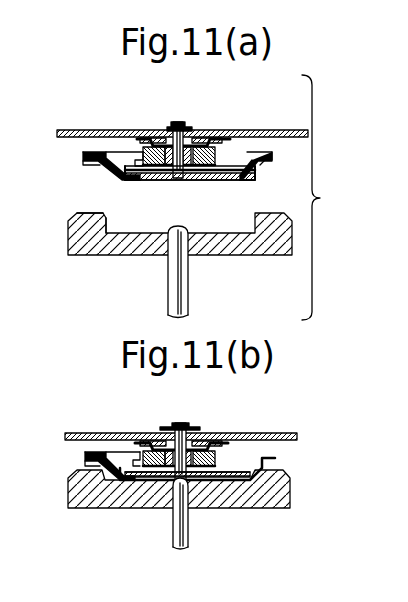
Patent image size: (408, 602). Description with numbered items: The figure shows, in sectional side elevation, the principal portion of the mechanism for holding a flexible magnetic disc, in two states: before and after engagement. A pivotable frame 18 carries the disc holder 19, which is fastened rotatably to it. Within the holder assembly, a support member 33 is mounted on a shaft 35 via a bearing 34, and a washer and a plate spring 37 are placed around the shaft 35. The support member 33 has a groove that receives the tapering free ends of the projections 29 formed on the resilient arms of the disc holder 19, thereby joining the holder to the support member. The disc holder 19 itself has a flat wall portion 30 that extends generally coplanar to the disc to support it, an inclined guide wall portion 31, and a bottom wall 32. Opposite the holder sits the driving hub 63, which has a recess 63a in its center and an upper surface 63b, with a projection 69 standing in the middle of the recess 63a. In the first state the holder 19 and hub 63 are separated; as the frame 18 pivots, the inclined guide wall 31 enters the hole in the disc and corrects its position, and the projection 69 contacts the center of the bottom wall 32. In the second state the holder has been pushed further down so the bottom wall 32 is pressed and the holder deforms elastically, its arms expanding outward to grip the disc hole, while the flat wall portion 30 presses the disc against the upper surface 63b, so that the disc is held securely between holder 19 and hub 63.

In FIG. 11A, the pivotable frame 18 is at (283, 130).
In FIG. 11B, the pivotable frame 18 is at (265, 433).
In FIG. 11A, the disc holder 19 is at (115, 177).
In FIG. 11B, the disc holder 19 is at (108, 478).
In FIG. 11A, the projection 29 is at (122, 163).
In FIG. 11B, the projection 29 is at (118, 462).
In FIG. 11A, the flat wall portion 30 is at (268, 162).
In FIG. 11A, the inclined guide wall portion 31 is at (246, 178).
In FIG. 11A, the bottom wall 32 is at (210, 180).
In FIG. 11A, the support member 33 is at (135, 173).
In FIG. 11B, the support member 33 is at (140, 481).
In FIG. 11A, the bearing 34 is at (197, 138).
In FIG. 11B, the bearing 34 is at (200, 441).
In FIG. 11A, the shaft 35 is at (178, 124).
In FIG. 11B, the shaft 35 is at (180, 424).
In FIG. 11A, the plate spring 37 is at (160, 139).
In FIG. 11B, the plate spring 37 is at (158, 442).
In FIG. 11A, the driving hub 63 is at (255, 242).
In FIG. 11B, the driving hub 63 is at (258, 497).
In FIG. 11A, the recess 63a is at (108, 230).
In FIG. 11A, the upper surface 63b is at (82, 212).
In FIG. 11A, the projection 69 is at (187, 226).
In FIG. 11B, the projection 69 is at (188, 482).